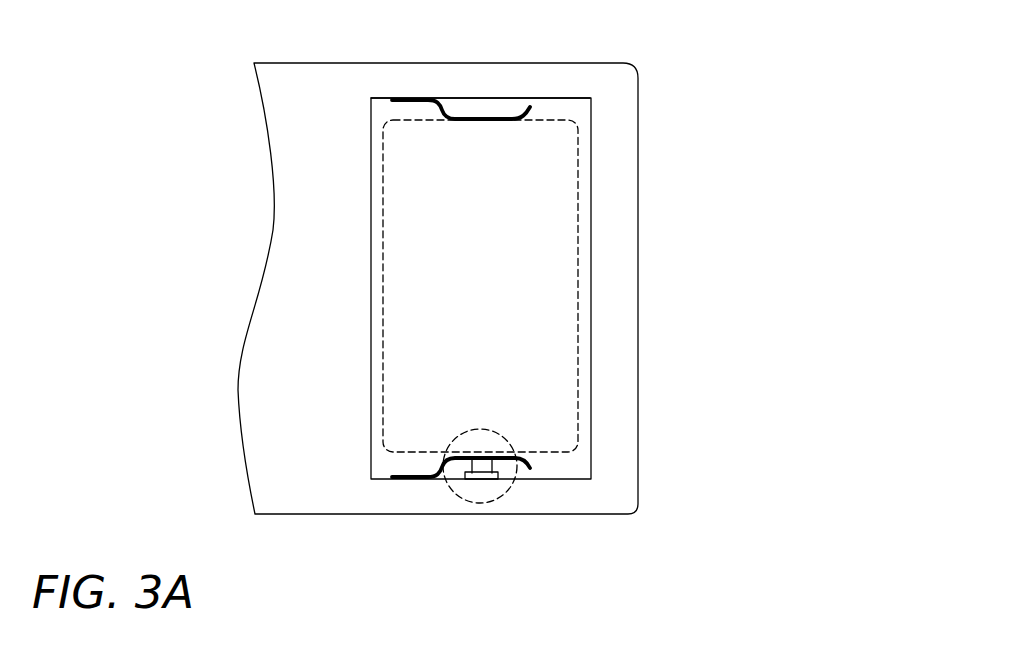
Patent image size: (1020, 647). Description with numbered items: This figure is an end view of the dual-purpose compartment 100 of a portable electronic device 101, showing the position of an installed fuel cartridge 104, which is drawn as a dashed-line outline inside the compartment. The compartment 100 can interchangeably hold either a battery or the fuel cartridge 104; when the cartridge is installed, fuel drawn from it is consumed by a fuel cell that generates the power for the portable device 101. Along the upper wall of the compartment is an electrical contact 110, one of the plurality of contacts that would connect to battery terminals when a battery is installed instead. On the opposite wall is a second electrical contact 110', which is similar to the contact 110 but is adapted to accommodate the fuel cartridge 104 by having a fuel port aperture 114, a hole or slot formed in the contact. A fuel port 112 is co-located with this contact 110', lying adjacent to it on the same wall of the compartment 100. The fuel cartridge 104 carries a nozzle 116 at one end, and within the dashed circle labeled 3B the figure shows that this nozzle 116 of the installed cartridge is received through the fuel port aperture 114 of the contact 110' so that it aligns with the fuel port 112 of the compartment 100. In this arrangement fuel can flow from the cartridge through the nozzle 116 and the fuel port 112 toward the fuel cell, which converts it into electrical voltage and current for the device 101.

The dual-purpose compartment 100 is at (556, 107).
The portable electronic device 101 is at (290, 190).
The fuel cartridge 104 is at (567, 270).
The electrical contact 110 is at (443, 66).
The electrical contact 110' is at (502, 506).
The fuel port 112 is at (475, 480).
The fuel port aperture 114 is at (480, 452).
The nozzle 116 is at (488, 480).
The dashed circle 3B is at (503, 433).